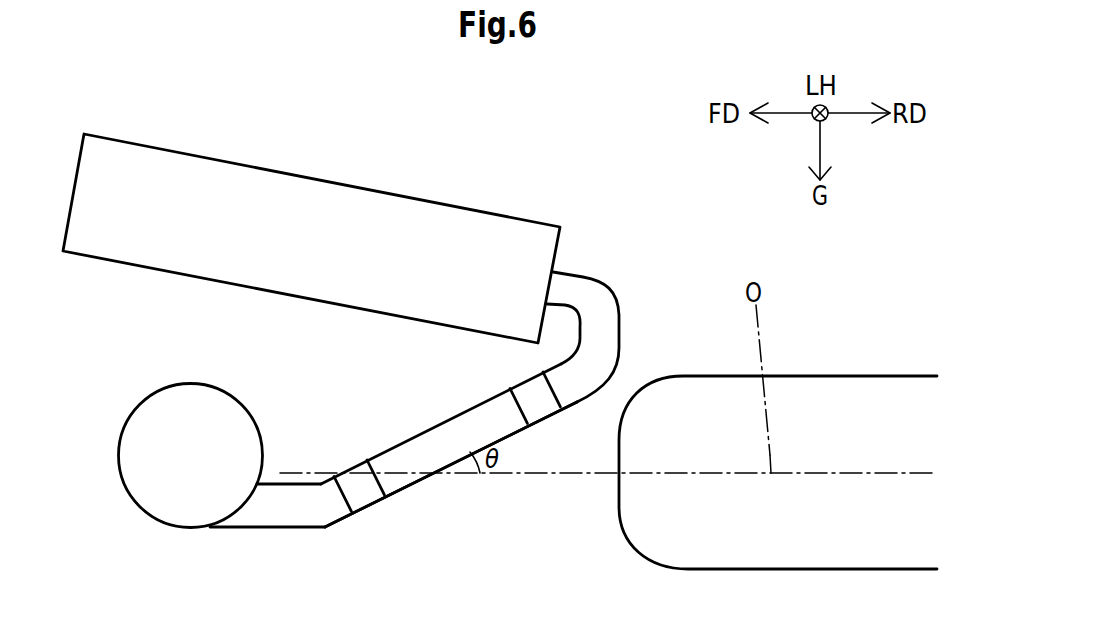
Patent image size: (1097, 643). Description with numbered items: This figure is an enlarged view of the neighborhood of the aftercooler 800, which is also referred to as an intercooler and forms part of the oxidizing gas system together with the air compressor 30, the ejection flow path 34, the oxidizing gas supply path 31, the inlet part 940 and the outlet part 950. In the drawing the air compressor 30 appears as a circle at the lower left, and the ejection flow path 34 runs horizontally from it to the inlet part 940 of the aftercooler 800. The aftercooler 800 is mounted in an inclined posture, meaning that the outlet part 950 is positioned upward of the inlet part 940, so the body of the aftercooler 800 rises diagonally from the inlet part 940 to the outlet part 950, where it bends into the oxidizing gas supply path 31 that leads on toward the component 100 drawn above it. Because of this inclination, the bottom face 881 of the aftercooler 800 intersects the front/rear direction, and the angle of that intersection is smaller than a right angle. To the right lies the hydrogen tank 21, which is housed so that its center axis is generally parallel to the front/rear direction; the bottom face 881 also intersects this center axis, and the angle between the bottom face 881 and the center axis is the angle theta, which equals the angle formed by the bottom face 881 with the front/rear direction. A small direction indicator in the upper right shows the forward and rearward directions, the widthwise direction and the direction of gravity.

The battery pack 100 is at (368, 187).
The oxidizing gas supply path 31 is at (607, 302).
The aftercooler 800 is at (447, 437).
The bottom face 881 is at (512, 438).
The outlet part 950 is at (528, 390).
The inlet part 940 is at (366, 503).
The ejection flow path 34 is at (293, 515).
The air compressor 30 is at (188, 505).
The hydrogen tank 21 is at (842, 408).